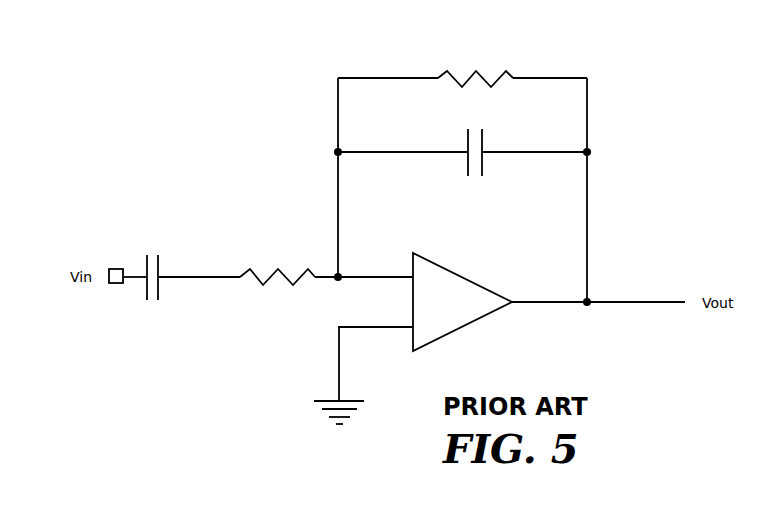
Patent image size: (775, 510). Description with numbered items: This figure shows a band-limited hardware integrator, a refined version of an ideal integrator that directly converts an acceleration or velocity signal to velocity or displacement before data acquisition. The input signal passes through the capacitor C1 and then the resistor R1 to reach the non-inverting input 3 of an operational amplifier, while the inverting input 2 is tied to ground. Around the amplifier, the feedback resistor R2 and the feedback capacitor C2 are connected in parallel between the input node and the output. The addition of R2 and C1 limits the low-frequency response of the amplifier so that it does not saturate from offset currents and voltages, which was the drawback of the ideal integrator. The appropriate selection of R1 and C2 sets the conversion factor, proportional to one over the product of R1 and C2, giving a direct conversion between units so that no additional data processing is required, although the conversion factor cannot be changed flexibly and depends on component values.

The capacitor C1 is at (154, 268).
The resistor R1 is at (277, 263).
The resistor R2 is at (475, 65).
The capacitor C2 is at (476, 143).
The non-inverting input of operational amplifier 3 is at (384, 271).
The inverting input of operational amplifier 2 is at (382, 355).